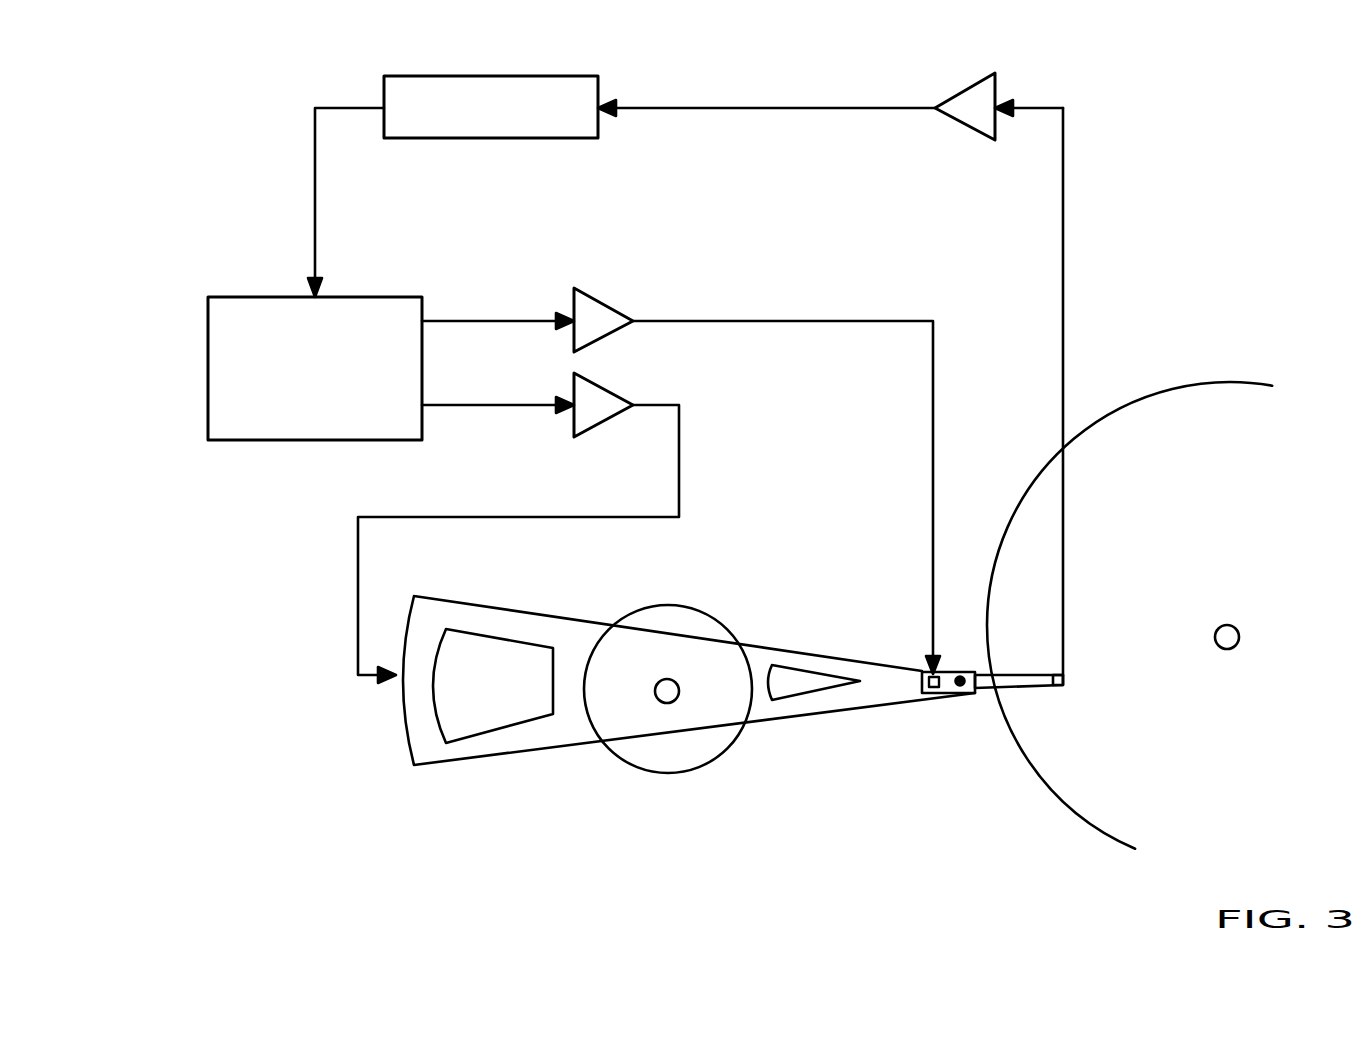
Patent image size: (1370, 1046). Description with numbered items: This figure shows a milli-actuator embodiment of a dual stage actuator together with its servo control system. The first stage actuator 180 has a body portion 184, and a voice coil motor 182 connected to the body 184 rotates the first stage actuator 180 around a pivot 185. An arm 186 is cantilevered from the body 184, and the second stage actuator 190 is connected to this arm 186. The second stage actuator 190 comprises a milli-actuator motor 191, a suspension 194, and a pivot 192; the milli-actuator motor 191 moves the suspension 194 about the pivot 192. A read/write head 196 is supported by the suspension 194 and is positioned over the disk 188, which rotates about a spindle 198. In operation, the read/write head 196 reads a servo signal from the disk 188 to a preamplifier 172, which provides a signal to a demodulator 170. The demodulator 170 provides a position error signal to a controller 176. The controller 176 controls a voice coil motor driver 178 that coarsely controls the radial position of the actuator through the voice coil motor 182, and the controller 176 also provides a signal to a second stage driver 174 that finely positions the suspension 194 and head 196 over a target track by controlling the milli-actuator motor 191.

The demodulator 170 is at (506, 139).
The preamplifier 172 is at (961, 92).
The second stage driver 174 is at (580, 291).
The controller 176 is at (360, 297).
The voice coil motor driver 178 is at (577, 437).
The first stage actuator 180 is at (973, 788).
The voice coil motor 182 is at (462, 609).
The body portion 184 is at (674, 615).
The pivot 185 is at (667, 692).
The arm 186 is at (843, 703).
The disk 188 is at (1120, 790).
The second stage actuator 190 is at (1063, 712).
The milli-actuator motor 191 is at (914, 667).
The pivot 192 is at (960, 676).
The suspension 194 is at (1009, 676).
The read/write head 196 is at (1065, 683).
The spindle 198 is at (1222, 649).